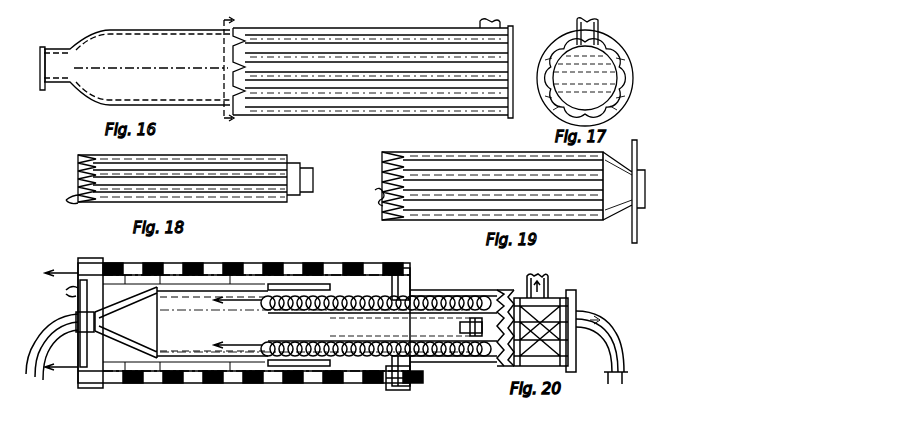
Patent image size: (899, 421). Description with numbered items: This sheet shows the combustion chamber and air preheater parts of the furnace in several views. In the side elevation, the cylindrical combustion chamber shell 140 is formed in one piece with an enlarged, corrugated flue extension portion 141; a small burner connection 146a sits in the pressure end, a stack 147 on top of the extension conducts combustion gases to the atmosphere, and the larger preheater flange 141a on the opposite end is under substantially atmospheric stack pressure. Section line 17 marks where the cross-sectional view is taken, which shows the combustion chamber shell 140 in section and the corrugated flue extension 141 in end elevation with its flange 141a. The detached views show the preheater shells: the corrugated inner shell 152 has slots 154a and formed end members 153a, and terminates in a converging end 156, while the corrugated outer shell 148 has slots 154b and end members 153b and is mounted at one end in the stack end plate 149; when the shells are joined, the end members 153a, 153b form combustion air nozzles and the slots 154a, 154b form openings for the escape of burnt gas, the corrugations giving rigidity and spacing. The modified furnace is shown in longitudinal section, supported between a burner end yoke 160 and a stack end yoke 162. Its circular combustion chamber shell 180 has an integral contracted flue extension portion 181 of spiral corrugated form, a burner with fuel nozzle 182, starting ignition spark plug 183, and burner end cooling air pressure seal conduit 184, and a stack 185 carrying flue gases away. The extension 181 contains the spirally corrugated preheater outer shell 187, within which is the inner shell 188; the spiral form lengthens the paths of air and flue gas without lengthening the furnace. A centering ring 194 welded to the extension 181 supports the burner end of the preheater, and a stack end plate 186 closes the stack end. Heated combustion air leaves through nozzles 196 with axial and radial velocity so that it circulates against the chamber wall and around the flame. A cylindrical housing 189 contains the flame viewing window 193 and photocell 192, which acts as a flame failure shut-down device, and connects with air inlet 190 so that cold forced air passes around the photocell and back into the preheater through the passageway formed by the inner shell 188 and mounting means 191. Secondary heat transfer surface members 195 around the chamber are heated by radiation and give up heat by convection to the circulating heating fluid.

In FIG. 16, the combustion chamber shell 140 is at (154, 33).
In FIG. 17, the combustion chamber shell 140 is at (574, 102).
In FIG. 16, the flue extension portion 141 is at (320, 30).
In FIG. 17, the flue extension portion 141 is at (633, 80).
In FIG. 16, the flange 141a is at (509, 118).
In FIG. 17, the flange 141a is at (627, 68).
In FIG. 16, the burner connection 146a is at (43, 46).
In FIG. 16, the stack 147 is at (480, 24).
In FIG. 17, the stack 147 is at (598, 26).
In FIG. 16, the section line 17- 17 is at (220, 68).
In FIG. 19, the outer shell 148 is at (478, 156).
In FIG. 19, the stack end plate 149 is at (638, 152).
In FIG. 18, the inner shell 152 is at (232, 156).
In FIG. 18, the end members of inner shell 153a is at (72, 178).
In FIG. 19, the end members of outer shell 153b is at (382, 178).
In FIG. 18, the slots of inner shell 154a is at (66, 198).
In FIG. 19, the slots of outer shell 154b is at (375, 206).
In FIG. 18, the converging end 156 is at (303, 166).
In FIG. 20, the burner end yoke 160 is at (76, 290).
In FIG. 20, the stack end yoke 162 is at (405, 386).
In FIG. 20, the combustion chamber shell 180 is at (230, 275).
In FIG. 20, the flue extension portion 181 is at (384, 284).
In FIG. 20, the fuel nozzle 182 is at (113, 325).
In FIG. 20, the starting ignition spark plug 183 is at (118, 305).
In FIG. 20, the burner end cooling air pressure seal conduit 184 is at (46, 372).
In FIG. 20, the stack 185 is at (549, 280).
In FIG. 20, the stack end plate 186 is at (572, 301).
In FIG. 20, the outer shell 187 is at (440, 290).
In FIG. 20, the inner shell 188 is at (352, 314).
In FIG. 20, the cylindrical housing 189 is at (541, 332).
In FIG. 20, the air inlet 190 is at (620, 330).
In FIG. 20, the mounting means 191 is at (458, 326).
In FIG. 20, the photocell 192 is at (476, 364).
In FIG. 20, the flame viewing window 193 is at (440, 329).
In FIG. 20, the centering ring 194 is at (336, 282).
In FIG. 20, the secondary heat transfer surface members 195 is at (288, 280).
In FIG. 20, the nozzles 196 is at (268, 312).